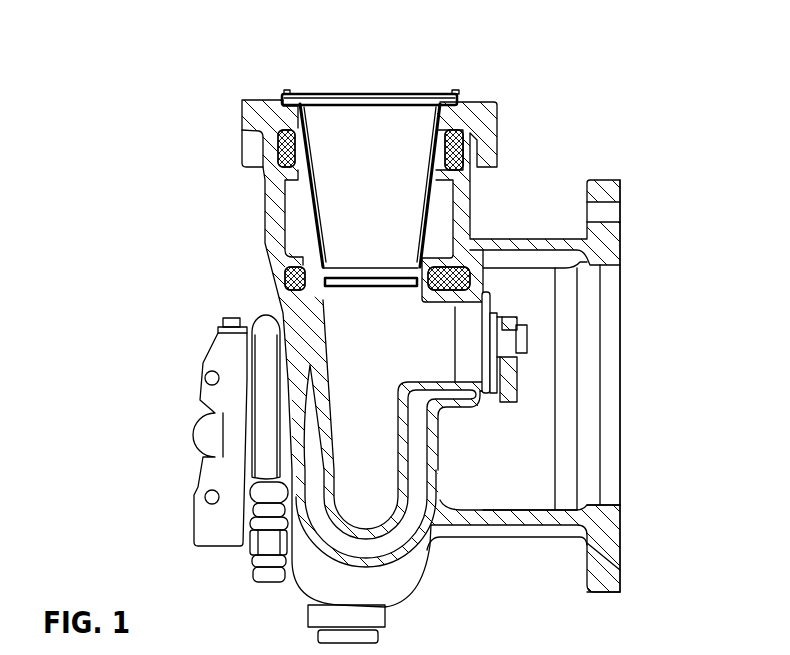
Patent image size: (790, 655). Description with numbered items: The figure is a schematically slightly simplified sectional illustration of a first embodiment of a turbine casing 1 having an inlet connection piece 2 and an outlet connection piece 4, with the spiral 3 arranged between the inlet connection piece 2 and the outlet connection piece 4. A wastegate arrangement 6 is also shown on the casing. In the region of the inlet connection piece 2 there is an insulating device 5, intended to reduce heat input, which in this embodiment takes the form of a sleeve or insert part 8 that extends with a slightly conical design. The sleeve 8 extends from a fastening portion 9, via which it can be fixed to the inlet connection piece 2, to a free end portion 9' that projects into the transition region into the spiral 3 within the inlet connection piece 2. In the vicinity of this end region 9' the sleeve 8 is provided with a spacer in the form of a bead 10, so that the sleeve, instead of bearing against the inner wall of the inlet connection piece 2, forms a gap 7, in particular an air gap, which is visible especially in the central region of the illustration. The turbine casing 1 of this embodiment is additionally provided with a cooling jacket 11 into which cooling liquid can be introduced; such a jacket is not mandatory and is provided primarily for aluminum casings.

The turbine casing 1 is at (662, 149).
The inlet connection piece 2 is at (505, 110).
The spiral 3 is at (344, 450).
The outlet connection piece 4 is at (577, 555).
The insulating device 5 is at (297, 88).
The wastegate arrangement 6 is at (505, 300).
The gap 7 is at (428, 211).
The sleeve 8 is at (296, 158).
The fastening portion 9 is at (474, 89).
The free end portion 9' is at (315, 292).
The bead 10 is at (342, 272).
The cooling jacket 11 is at (290, 140).